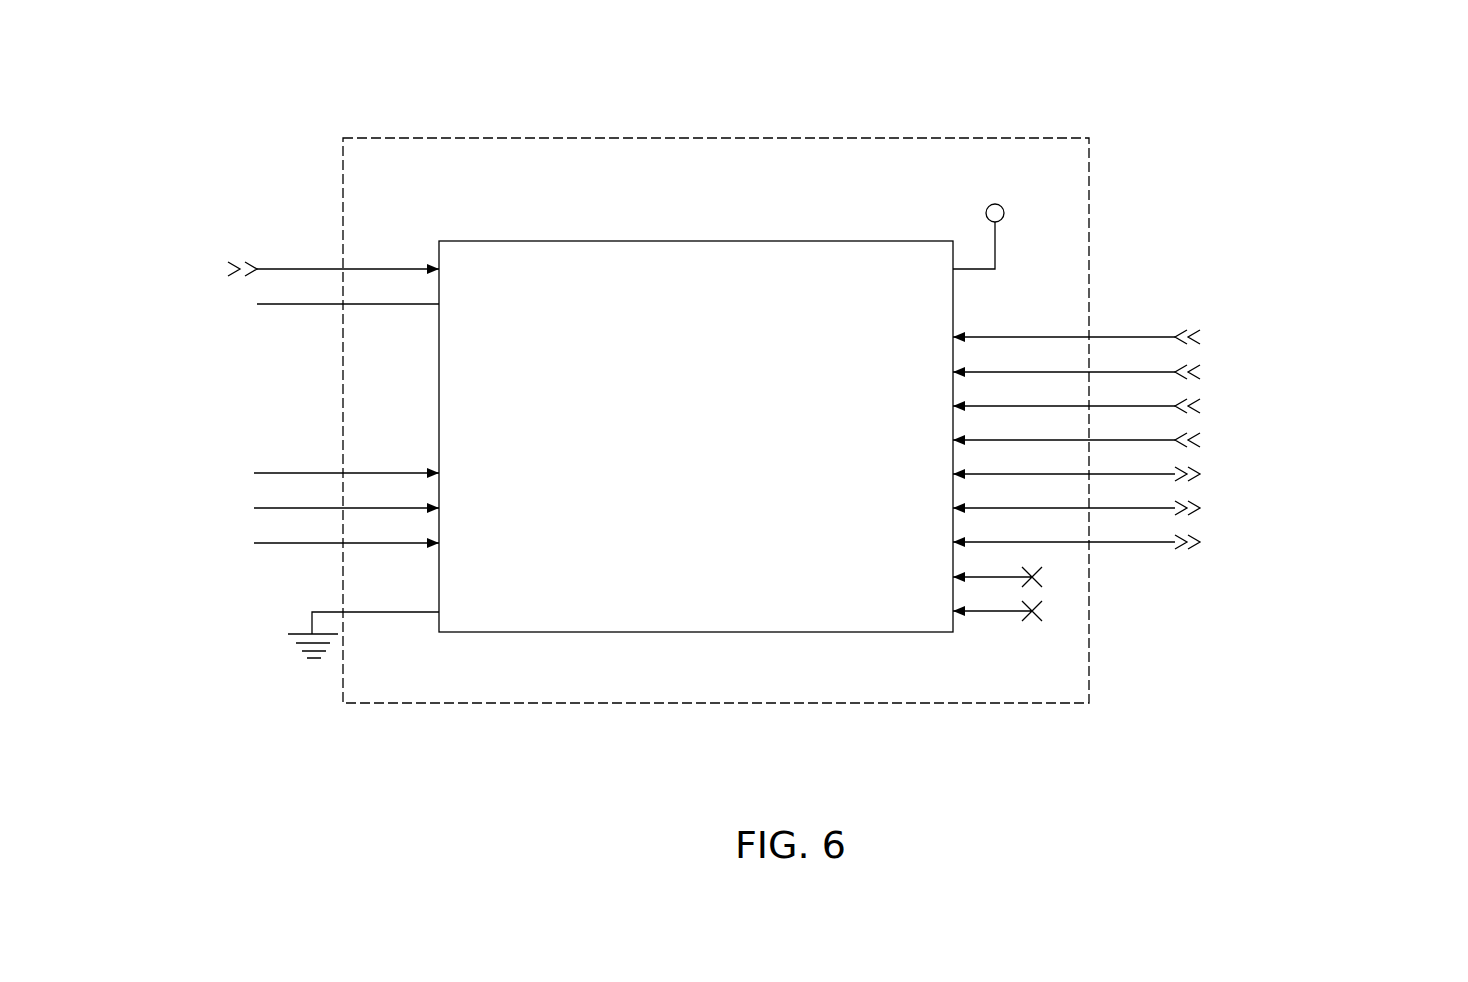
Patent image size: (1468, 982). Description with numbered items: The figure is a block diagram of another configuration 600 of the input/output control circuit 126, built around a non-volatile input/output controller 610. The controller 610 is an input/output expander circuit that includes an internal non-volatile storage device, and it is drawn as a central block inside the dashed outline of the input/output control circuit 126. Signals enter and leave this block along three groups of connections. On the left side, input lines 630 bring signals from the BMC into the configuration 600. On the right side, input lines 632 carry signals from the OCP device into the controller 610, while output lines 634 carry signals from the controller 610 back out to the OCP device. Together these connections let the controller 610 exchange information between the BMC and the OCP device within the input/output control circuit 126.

The configuration 600 is at (352, 62).
The input/output control circuit 126 is at (884, 138).
The non-volatile input/output controller 610 is at (697, 632).
The input lines 630 is at (281, 545).
The input lines 632 is at (1137, 337).
The output lines 634 is at (1137, 545).